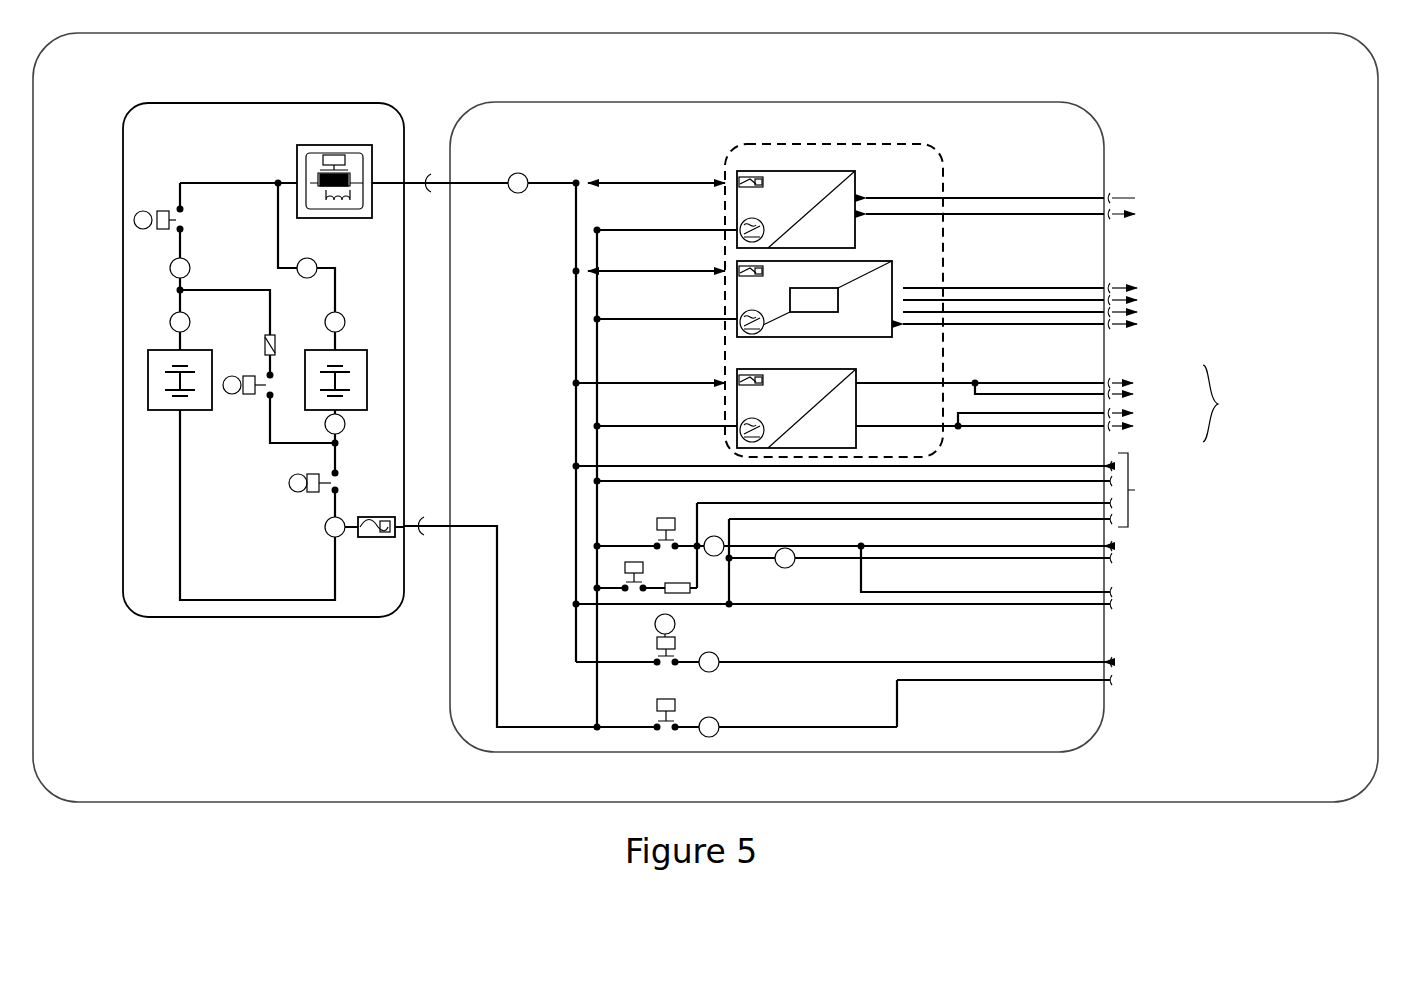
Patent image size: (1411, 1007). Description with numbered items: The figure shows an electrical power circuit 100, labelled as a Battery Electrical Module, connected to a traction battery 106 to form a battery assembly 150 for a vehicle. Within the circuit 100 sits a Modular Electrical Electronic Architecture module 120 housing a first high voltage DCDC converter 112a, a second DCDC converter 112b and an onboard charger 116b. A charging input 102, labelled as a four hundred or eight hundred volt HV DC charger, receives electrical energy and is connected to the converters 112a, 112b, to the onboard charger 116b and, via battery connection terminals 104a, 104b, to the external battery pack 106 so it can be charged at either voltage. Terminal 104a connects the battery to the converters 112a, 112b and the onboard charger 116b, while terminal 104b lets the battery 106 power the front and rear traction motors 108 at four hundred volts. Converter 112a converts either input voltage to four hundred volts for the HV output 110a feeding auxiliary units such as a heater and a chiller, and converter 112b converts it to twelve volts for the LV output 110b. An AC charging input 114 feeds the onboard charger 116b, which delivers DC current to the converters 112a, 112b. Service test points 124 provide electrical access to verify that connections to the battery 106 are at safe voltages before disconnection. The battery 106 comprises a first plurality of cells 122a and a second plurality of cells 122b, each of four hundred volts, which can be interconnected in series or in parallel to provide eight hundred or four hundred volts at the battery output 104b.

The electrical power circuit 100 is at (949, 724).
The charging input 102 is at (1212, 683).
The battery connection terminal 104a is at (440, 532).
The battery connection terminal 104b is at (433, 181).
The traction battery 106 is at (338, 132).
The traction motors 108 is at (1275, 578).
The HV output 110a is at (1270, 420).
The LV output 110b is at (1258, 228).
The first high voltage DCDC converter 112a is at (733, 399).
The second DCDC converter 112b is at (858, 172).
The AC charging input 114 is at (1262, 320).
The on-board charger (OBC) 116b is at (897, 268).
The MEEA module 120 is at (792, 145).
The first plurality of cells 122a is at (145, 410).
The second plurality of cells 122b is at (370, 412).
The service test points 124 is at (1232, 501).
The battery assembly 150 is at (1190, 76).